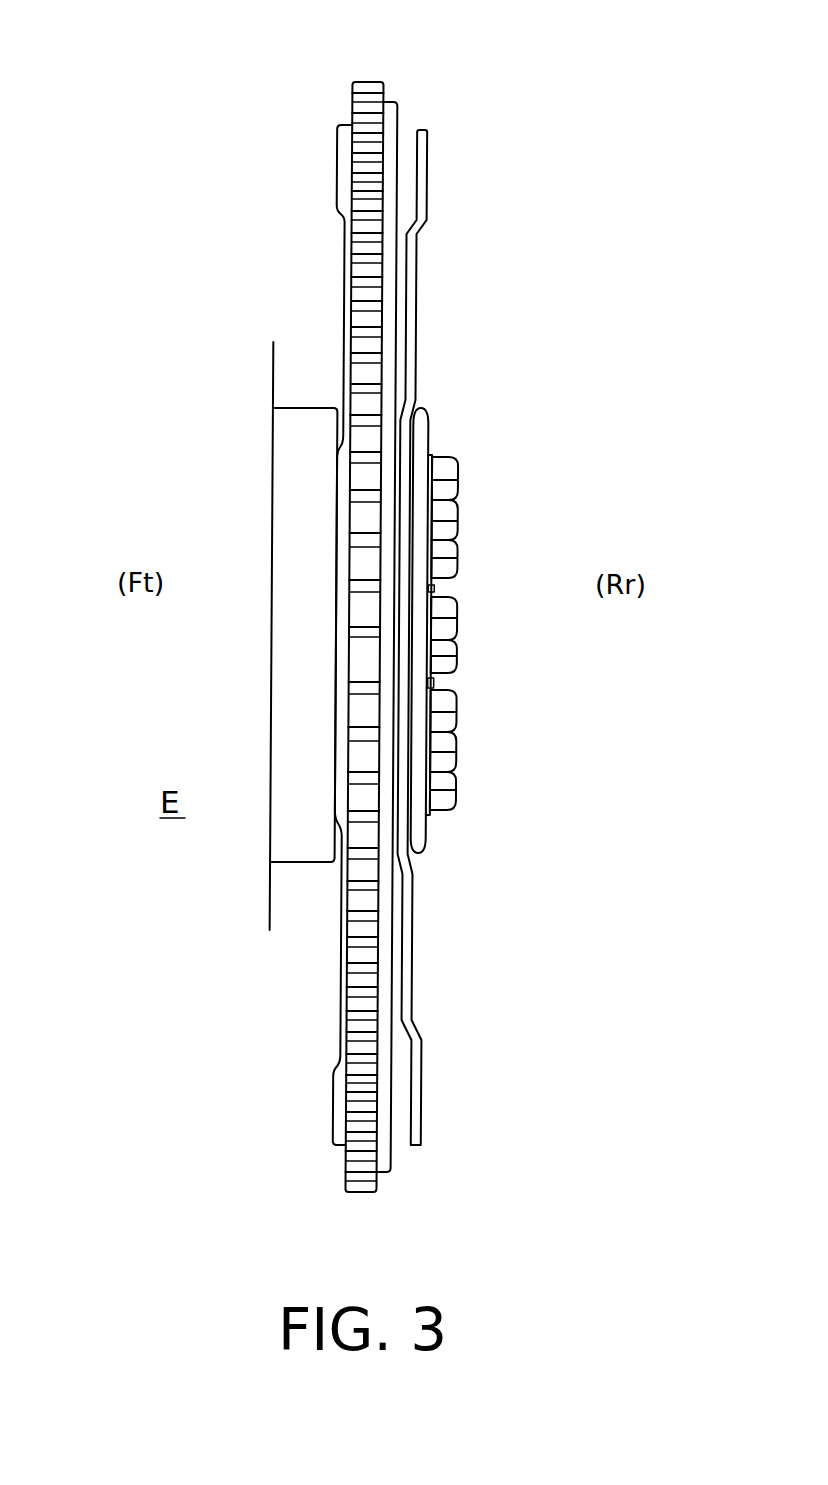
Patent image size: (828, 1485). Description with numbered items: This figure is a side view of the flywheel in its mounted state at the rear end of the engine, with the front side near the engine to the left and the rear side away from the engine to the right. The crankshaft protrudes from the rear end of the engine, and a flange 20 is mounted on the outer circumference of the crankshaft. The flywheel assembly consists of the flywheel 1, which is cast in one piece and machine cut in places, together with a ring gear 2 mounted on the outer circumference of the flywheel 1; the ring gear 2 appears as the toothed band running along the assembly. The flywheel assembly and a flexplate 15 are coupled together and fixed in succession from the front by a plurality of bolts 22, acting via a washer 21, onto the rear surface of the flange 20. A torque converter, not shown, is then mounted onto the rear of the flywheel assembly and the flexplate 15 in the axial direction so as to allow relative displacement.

The flywheel 1 is at (334, 172).
The ring gear 2 is at (375, 84).
The flexplate 15 is at (423, 193).
The flange 20 is at (292, 686).
The washer 21 is at (421, 452).
The bolts 22 is at (447, 547).